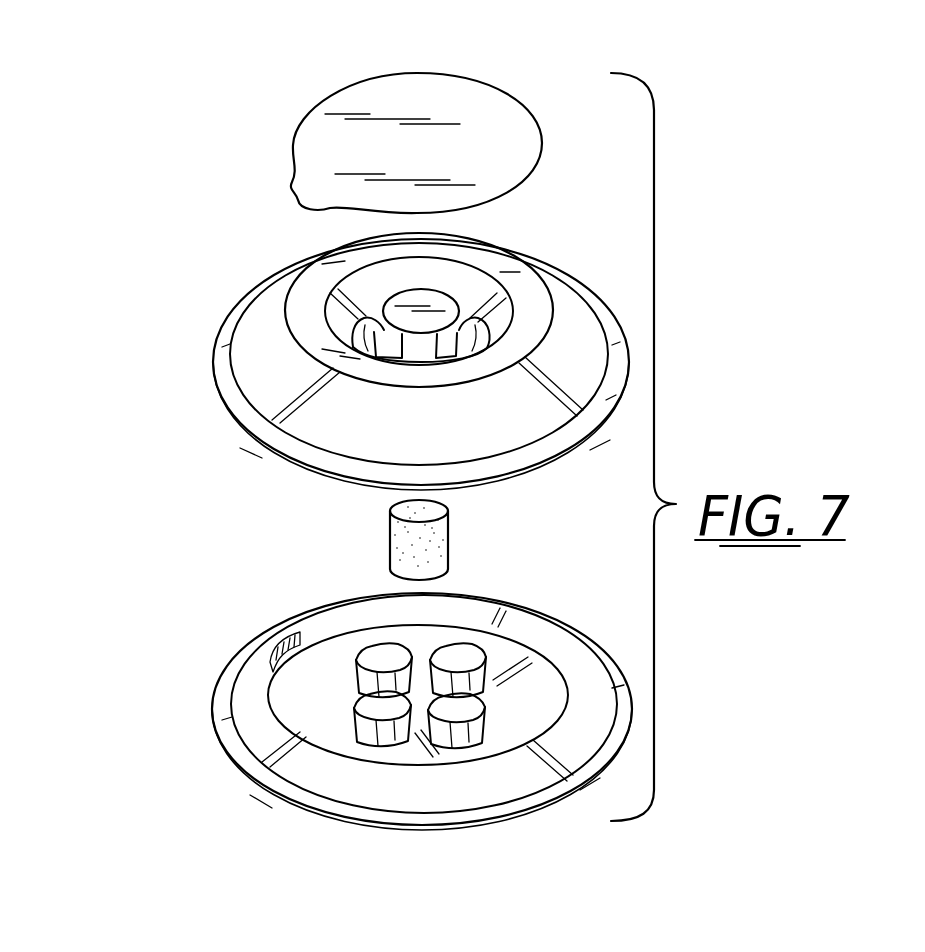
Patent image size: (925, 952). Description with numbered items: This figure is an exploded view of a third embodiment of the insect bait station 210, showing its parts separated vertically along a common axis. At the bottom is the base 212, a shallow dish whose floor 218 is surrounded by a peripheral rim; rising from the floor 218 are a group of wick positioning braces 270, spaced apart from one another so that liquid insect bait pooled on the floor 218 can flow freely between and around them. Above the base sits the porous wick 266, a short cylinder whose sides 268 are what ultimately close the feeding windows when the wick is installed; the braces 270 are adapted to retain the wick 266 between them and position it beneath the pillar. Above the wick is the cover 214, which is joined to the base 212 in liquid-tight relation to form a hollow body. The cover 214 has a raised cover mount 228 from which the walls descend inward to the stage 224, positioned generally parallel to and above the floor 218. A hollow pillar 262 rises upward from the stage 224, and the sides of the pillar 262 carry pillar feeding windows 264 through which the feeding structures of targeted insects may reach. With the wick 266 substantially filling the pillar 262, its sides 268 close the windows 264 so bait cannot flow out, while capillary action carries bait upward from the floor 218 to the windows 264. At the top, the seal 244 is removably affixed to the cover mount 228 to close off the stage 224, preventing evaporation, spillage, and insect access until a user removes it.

The insect bait station 210 is at (170, 140).
The seal 244 is at (460, 75).
The cover 214 is at (270, 398).
The cover mount 228 is at (505, 279).
The hollow pillar 262 is at (437, 297).
The stage 224 is at (361, 335).
The pillar feeding windows 264 is at (390, 339).
The porous wick 266 is at (450, 560).
The sides of the wick 268 is at (403, 543).
The base 212 is at (422, 795).
The floor 218 is at (323, 728).
The wick positioning braces 270 is at (357, 672).